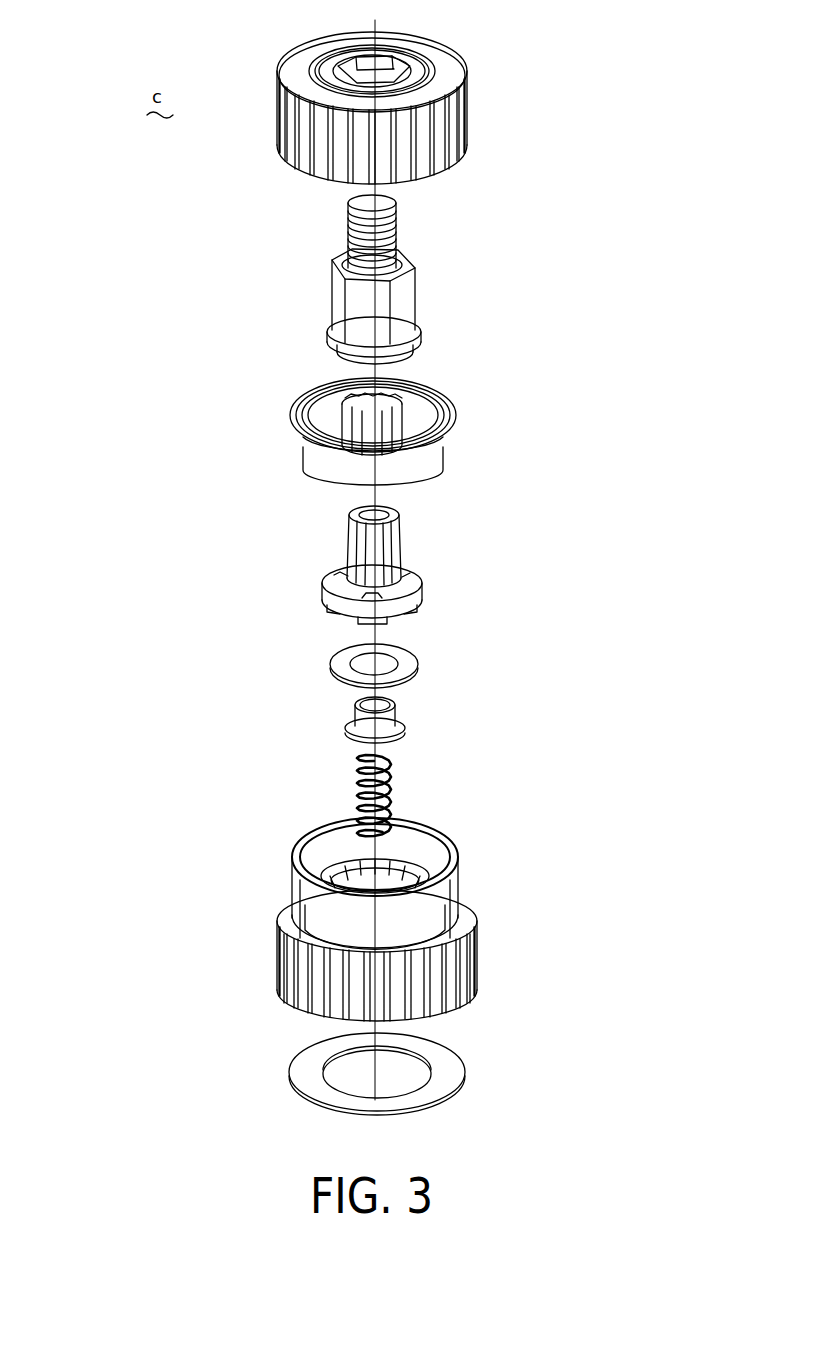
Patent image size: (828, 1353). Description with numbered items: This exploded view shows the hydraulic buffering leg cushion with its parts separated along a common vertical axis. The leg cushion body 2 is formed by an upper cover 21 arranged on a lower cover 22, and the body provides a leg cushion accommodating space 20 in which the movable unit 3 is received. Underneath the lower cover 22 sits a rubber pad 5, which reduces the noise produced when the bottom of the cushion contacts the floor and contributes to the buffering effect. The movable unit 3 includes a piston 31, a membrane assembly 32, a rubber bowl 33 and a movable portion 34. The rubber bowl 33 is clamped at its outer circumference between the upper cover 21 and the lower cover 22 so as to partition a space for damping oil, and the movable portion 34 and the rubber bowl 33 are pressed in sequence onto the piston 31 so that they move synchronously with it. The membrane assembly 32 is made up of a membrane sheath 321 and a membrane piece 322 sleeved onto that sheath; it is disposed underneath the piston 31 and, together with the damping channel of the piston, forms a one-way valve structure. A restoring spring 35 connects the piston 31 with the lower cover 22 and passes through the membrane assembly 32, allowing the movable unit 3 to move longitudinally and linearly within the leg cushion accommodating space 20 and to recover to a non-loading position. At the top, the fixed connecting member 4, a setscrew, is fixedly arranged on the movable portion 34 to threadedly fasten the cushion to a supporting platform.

The leg cushion body 2 is at (555, 98).
The movable unit 3 is at (212, 313).
The fixed connecting member 4 is at (348, 236).
The rubber pad 5 is at (457, 1077).
The leg cushion accommodating space 20 is at (409, 850).
The upper cover 21 is at (470, 114).
The lower cover 22 is at (475, 948).
The piston 31 is at (322, 597).
The membrane assembly 32 is at (268, 645).
The rubber bowl 33 is at (292, 428).
The movable portion 34 is at (337, 318).
The restoring spring 35 is at (362, 802).
The membrane sheath 321 is at (347, 723).
The membrane piece 322 is at (332, 665).